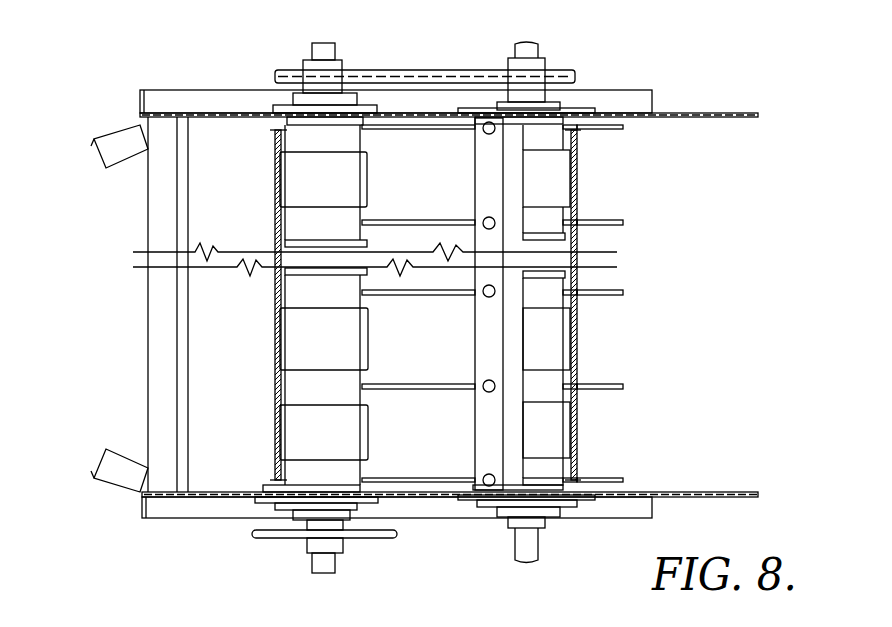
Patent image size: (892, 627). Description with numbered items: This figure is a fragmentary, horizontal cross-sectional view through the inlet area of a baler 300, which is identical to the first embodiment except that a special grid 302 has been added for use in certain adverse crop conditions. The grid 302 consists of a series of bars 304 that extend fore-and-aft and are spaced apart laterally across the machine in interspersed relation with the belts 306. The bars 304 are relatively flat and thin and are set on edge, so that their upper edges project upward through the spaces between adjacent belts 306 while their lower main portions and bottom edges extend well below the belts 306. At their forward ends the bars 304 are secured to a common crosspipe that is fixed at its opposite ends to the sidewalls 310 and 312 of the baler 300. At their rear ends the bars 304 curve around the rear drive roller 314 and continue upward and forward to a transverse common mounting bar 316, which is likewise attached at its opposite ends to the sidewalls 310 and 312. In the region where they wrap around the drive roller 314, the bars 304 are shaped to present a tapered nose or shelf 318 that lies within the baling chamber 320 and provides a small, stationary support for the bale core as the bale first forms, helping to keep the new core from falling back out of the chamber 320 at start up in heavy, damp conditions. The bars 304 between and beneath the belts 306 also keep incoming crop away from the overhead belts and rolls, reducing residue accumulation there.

The baler 300 is at (99, 508).
The grid 302 is at (428, 490).
The bars 304 is at (399, 222).
The belts 306 is at (273, 172).
The sidewall 310 is at (225, 497).
The sidewall 312 is at (223, 113).
The rear drive roller 314 is at (547, 467).
The common mounting bar 316 is at (480, 328).
The tapered nose or shelf 318 is at (627, 382).
The baling chamber 320 is at (674, 124).